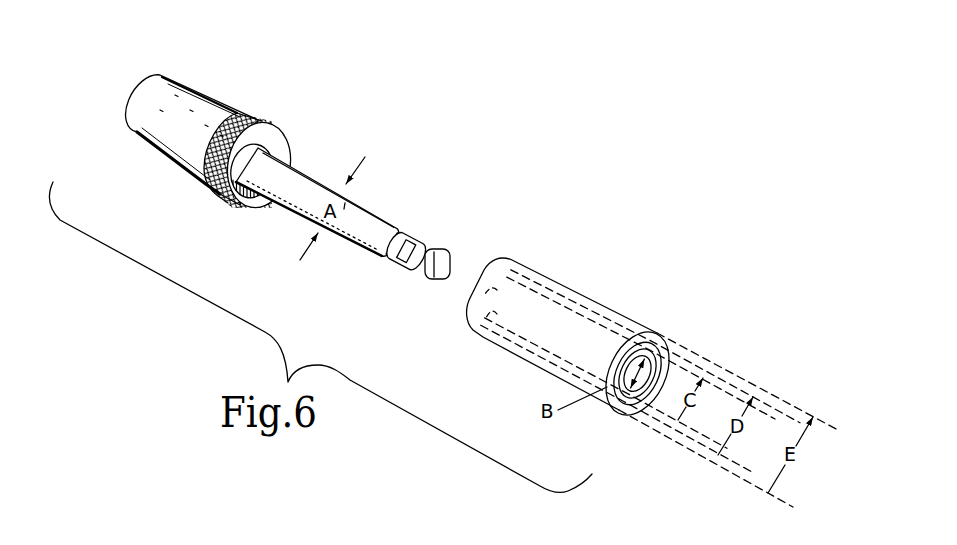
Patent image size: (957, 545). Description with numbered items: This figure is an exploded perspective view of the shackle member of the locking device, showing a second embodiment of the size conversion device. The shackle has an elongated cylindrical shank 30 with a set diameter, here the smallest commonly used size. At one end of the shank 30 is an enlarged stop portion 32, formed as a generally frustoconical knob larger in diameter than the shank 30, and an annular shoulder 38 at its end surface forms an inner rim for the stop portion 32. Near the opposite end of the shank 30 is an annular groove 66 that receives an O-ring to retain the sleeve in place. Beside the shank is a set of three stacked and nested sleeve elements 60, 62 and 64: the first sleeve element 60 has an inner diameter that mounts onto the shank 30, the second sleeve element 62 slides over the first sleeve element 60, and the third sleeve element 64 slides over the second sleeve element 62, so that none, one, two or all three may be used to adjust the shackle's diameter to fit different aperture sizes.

The stop portion 32 is at (186, 131).
The annular shoulder 38 is at (274, 137).
The shank 30 is at (358, 204).
The annular groove 66 is at (398, 226).
The first sleeve element 60 is at (521, 278).
The second sleeve element 62 is at (538, 278).
The third sleeve element 64 is at (569, 284).